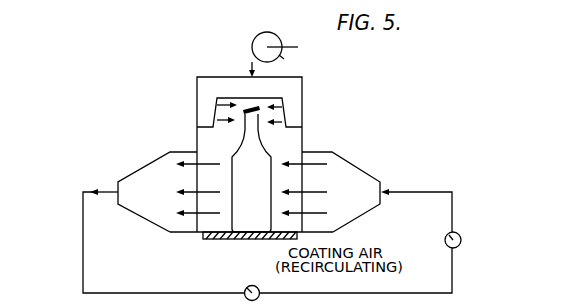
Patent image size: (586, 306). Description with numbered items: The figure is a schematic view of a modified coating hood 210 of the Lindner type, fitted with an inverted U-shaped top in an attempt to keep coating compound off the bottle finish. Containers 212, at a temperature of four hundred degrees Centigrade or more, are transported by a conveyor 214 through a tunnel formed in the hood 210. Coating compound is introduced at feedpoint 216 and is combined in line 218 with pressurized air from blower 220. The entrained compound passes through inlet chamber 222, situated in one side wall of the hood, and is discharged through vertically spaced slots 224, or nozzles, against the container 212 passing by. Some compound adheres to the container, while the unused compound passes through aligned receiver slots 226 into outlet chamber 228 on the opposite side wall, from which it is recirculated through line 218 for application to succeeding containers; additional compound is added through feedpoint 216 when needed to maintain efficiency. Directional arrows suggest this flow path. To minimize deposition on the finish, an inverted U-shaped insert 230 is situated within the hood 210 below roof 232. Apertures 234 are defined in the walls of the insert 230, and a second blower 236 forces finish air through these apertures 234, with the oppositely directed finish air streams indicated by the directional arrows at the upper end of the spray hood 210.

The coating hood 210 is at (180, 113).
The container 212 is at (263, 160).
The conveyor 214 is at (233, 240).
The feedpoint 216 is at (250, 287).
The line 218 is at (434, 192).
The blower 220 is at (461, 237).
The inlet chamber 222 is at (360, 165).
The vertically spaced slots 224 is at (305, 170).
The receiver slots 226 is at (198, 172).
The outlet chamber 228 is at (145, 164).
The inverted U-shaped insert 230 is at (277, 97).
The roof 232 is at (265, 77).
The apertures 234 is at (283, 102).
The second blower 236 is at (263, 42).